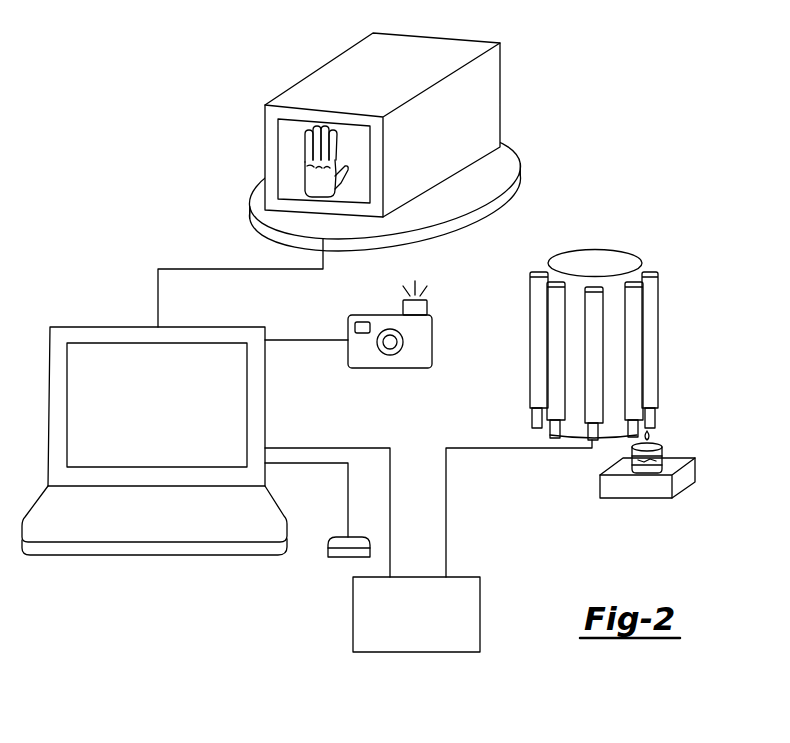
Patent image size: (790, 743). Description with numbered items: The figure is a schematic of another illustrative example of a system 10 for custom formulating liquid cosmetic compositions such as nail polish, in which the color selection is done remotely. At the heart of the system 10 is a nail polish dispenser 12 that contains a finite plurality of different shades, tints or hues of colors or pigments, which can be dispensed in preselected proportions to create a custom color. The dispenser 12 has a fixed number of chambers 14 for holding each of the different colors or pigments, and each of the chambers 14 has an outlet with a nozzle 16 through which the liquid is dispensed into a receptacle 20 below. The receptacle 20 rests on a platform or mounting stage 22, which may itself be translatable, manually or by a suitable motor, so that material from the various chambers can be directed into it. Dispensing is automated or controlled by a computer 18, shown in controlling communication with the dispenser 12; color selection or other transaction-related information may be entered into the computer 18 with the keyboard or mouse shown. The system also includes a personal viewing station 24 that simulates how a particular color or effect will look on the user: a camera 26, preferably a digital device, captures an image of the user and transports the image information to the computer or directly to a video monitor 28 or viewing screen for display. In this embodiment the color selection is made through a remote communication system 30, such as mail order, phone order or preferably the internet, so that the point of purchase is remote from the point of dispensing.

The system 10 is at (145, 582).
The nail polish dispenser 12 is at (625, 236).
The chambers 14 is at (532, 283).
The nozzle 16 is at (656, 415).
The computer 18 is at (169, 416).
The receptacle 20 is at (670, 466).
The mounting stage 22 is at (685, 482).
The personal viewing station 24 is at (280, 78).
The camera 26 is at (432, 338).
The video monitor 28 is at (285, 162).
The remote communication system 30 is at (430, 623).